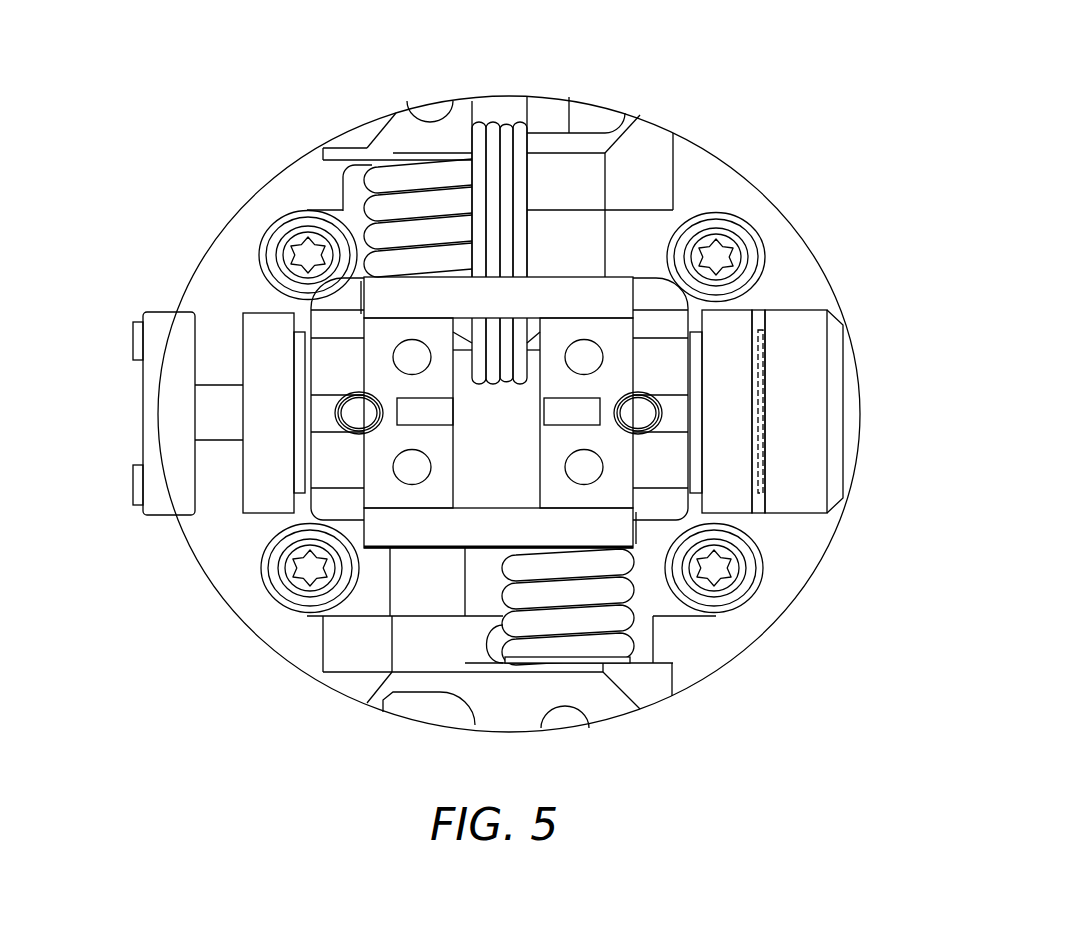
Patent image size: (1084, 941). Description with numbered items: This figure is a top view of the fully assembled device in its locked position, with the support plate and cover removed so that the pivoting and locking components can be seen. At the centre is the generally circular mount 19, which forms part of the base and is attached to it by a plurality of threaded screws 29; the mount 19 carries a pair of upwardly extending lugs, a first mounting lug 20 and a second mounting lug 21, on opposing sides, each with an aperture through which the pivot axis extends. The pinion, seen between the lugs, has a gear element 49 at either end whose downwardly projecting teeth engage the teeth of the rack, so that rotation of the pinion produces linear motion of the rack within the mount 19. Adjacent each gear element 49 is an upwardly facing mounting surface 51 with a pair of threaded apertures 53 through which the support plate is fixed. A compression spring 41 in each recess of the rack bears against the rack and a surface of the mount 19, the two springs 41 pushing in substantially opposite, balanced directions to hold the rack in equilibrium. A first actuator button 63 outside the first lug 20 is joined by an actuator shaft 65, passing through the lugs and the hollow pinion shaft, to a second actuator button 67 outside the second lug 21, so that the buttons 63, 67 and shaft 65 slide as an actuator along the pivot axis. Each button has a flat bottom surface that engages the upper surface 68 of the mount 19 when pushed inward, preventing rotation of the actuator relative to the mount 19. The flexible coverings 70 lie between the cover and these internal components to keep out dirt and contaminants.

The mount 19 is at (605, 713).
The first mounting lug 20 is at (252, 500).
The second mounting lug 21 is at (737, 320).
The threaded screws 29 is at (727, 245).
The compression spring 41 is at (407, 187).
The gear element 49 is at (327, 318).
The mounting surface 51 is at (615, 365).
The threaded apertures 53 is at (398, 355).
The first actuator button 63 is at (150, 410).
The actuator shaft 65 is at (219, 392).
The second actuator button 67 is at (815, 338).
The upper surface of the mount 68 is at (820, 538).
The flexible coverings 70 is at (571, 290).